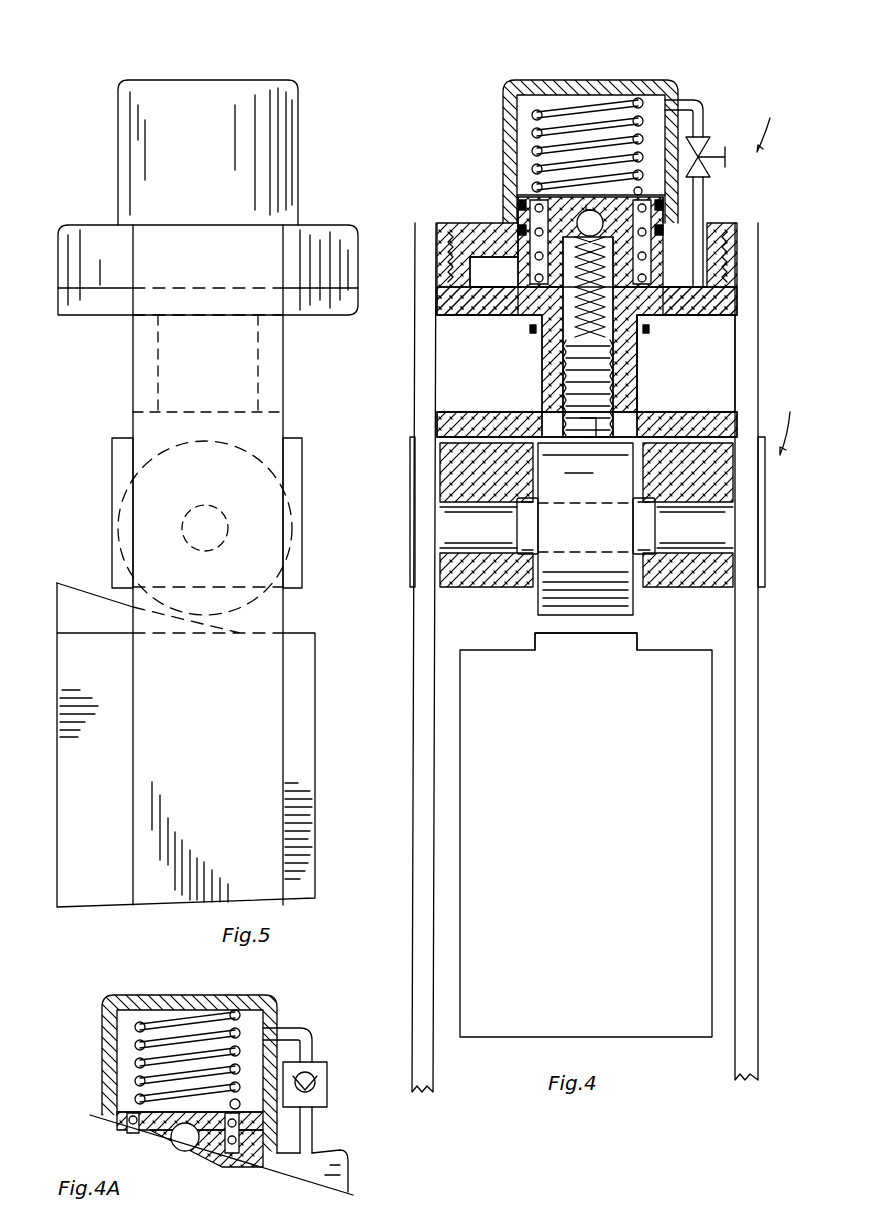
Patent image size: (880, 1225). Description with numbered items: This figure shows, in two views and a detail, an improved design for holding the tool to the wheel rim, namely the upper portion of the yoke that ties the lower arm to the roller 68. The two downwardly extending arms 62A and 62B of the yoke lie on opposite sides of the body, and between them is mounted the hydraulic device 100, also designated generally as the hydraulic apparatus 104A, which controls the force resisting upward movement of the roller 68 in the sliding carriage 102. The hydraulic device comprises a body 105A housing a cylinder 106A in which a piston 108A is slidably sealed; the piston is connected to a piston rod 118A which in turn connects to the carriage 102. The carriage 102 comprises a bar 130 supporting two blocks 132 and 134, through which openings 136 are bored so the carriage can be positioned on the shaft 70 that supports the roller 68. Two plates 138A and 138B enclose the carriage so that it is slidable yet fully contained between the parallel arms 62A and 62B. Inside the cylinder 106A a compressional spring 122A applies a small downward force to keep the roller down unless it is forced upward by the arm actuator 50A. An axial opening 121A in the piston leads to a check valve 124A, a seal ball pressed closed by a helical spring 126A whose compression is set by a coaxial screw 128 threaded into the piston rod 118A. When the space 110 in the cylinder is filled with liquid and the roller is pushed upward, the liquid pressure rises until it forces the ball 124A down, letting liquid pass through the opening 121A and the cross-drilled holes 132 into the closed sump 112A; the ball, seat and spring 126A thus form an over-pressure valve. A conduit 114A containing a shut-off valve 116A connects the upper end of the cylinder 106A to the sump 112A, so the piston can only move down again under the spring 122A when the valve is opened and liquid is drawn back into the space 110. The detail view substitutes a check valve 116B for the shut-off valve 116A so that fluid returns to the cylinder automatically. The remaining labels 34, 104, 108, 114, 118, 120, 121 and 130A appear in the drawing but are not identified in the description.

In FIG. 4, the rod 34 is at (593, 827).
In FIG. 5, the rod 34 is at (186, 721).
In FIG. 4, the arm actuator 50A is at (600, 635).
In FIG. 5, the arm actuator 50A is at (88, 592).
In FIG. 4, the arm of the yoke 62A is at (415, 716).
In FIG. 5, the arm of the yoke 62A is at (205, 724).
In FIG. 4, the arm of the yoke 62B is at (758, 710).
In FIG. 4, the roller 68 is at (538, 604).
In FIG. 5, the roller 68 is at (252, 606).
In FIG. 4, the shaft 70 is at (518, 532).
In FIG. 5, the shaft 70 is at (207, 518).
In FIG. 4, the hydraulic device 100 is at (780, 123).
In FIG. 4, the sliding carriage 102 is at (796, 422).
In FIG. 4A, the cap 104 is at (280, 1003).
In FIG. 4, the hydraulic apparatus 104A is at (615, 119).
In FIG. 5, the hydraulic apparatus 104A is at (302, 118).
In FIG. 4, the body 105A is at (545, 88).
In FIG. 4, the cylinder 106A is at (519, 128).
In FIG. 4A, the piston 108 is at (165, 1118).
In FIG. 4, the piston 108A is at (604, 242).
In FIG. 4, the space 110 is at (549, 146).
In FIG. 4, the sump 112A is at (682, 278).
In FIG. 4A, the conduit 114 is at (312, 1034).
In FIG. 4, the conduit 114A is at (690, 100).
In FIG. 4, the shut-off valve 116A is at (735, 130).
In FIG. 4A, the check valve 116B is at (327, 1079).
In FIG. 5, the bore 118 is at (262, 364).
In FIG. 4, the piston rod 118A is at (572, 330).
In FIG. 4, the spring end 120 is at (528, 185).
In FIG. 4, the seal 121 is at (655, 318).
In FIG. 4, the axial opening 121A is at (598, 208).
In FIG. 4, the compressional spring 122A is at (544, 146).
In FIG. 4A, the compressional spring 122A is at (150, 1058).
In FIG. 4, the check valve 124A is at (594, 256).
In FIG. 5, the check valve 124A is at (208, 270).
In FIG. 4, the helical spring 126A is at (556, 325).
In FIG. 4, the coaxial screw 128 is at (618, 370).
In FIG. 4, the bar 130 is at (686, 426).
In FIG. 4, the chamber 130A is at (710, 318).
In FIG. 4, the block 132 is at (522, 281).
In FIG. 4, the block 134 is at (460, 468).
In FIG. 4, the openings 136 is at (700, 515).
In FIG. 4, the plate 138A is at (412, 512).
In FIG. 5, the plate 138A is at (112, 462).
In FIG. 4, the plate 138B is at (415, 533).
In FIG. 5, the plate 138B is at (302, 468).